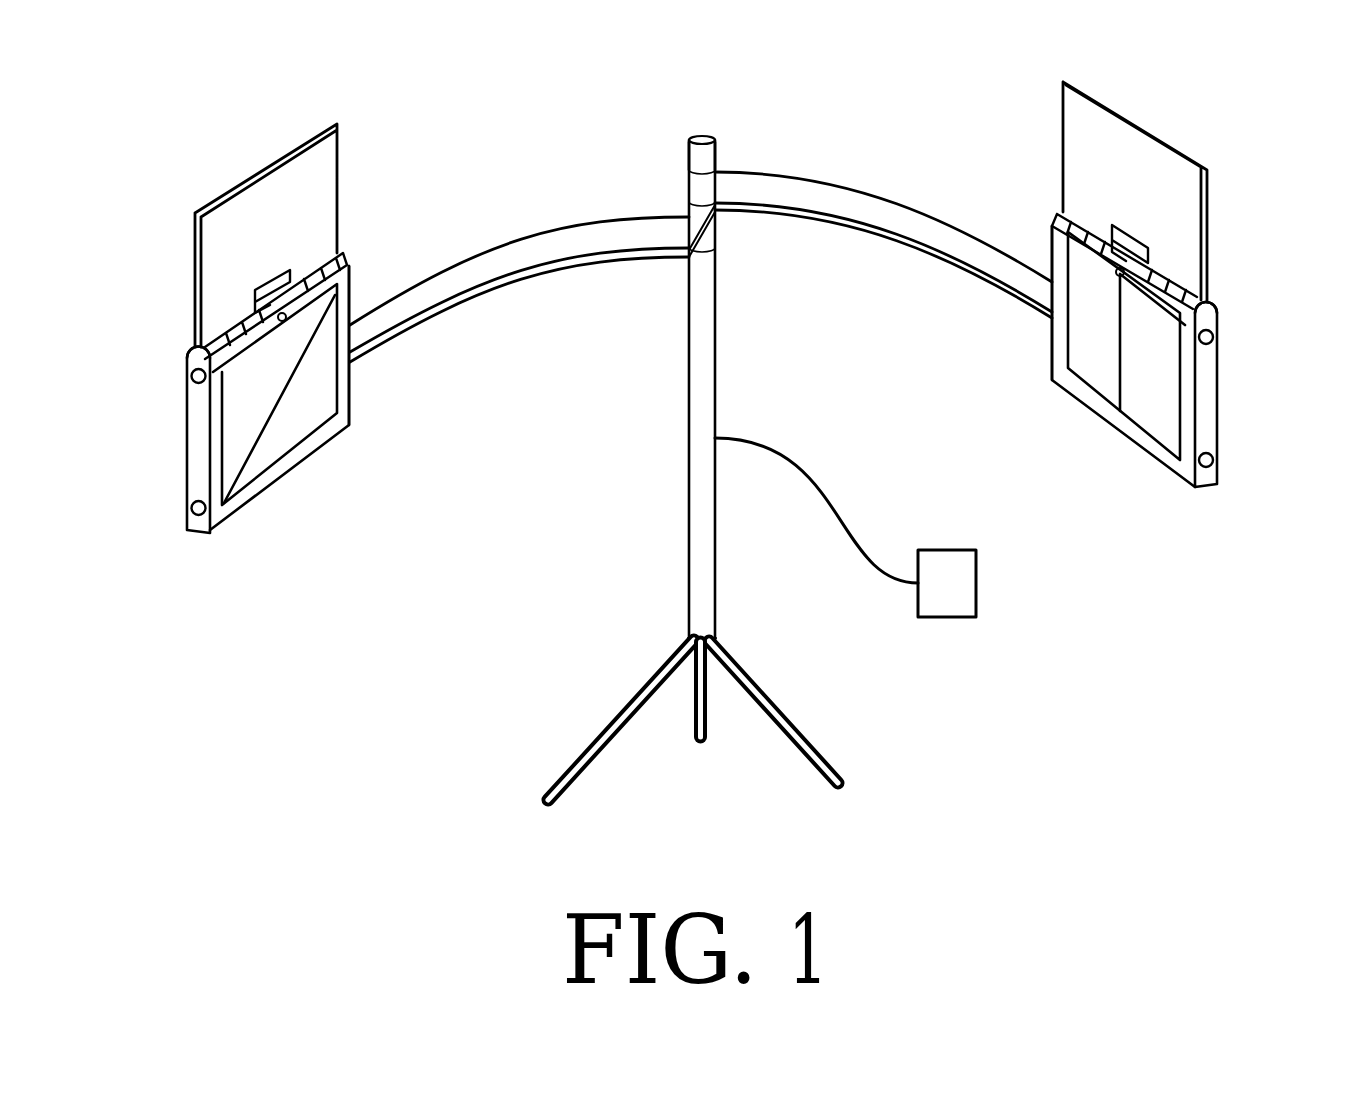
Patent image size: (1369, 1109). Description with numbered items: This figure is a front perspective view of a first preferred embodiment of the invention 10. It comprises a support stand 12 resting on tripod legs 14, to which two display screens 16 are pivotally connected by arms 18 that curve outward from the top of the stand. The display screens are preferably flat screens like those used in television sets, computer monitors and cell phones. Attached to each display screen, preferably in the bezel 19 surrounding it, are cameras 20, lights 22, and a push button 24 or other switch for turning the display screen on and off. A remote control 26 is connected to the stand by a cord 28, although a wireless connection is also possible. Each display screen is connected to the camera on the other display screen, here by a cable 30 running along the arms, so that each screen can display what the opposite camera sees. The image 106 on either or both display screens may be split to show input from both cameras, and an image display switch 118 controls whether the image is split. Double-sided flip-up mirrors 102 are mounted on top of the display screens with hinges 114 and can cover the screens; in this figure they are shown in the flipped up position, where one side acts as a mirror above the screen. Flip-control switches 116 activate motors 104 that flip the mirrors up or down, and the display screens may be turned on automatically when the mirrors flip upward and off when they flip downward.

The invention 10 is at (704, 138).
The support stand 12 is at (689, 545).
The tripod legs 14 is at (818, 775).
The display screens 16 is at (187, 450).
The arms 18 is at (512, 240).
The bezel 19 is at (285, 484).
The cameras 20 is at (283, 322).
The lights 22 is at (224, 370).
The push button 24 is at (350, 268).
The remote control 26 is at (976, 583).
The cord 28 is at (822, 483).
The cable 30 is at (468, 292).
The double-sided flip-up mirrors 102 is at (265, 172).
The motors 104 is at (262, 290).
The image 106 is at (342, 417).
The hinges 114 is at (187, 357).
The flip-control switches 116 is at (191, 376).
The image display switch 118 is at (191, 508).